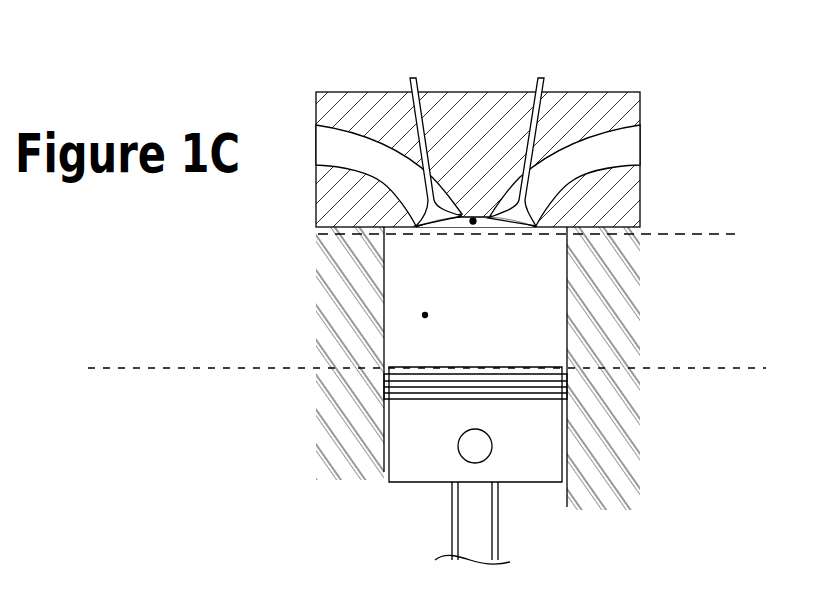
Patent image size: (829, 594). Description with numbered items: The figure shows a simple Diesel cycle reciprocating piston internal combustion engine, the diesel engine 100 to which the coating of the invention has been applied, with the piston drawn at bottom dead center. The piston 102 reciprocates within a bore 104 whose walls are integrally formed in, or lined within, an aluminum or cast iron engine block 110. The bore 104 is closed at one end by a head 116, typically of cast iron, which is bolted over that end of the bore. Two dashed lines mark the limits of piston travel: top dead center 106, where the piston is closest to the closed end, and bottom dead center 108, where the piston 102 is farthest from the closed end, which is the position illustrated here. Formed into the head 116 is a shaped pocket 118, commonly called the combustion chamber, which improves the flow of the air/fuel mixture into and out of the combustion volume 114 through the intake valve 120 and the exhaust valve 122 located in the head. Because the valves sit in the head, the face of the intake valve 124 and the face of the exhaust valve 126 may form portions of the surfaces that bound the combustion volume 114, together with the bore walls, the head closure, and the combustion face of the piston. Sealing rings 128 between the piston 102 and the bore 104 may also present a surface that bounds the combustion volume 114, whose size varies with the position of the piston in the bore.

The diesel engine 100 is at (440, 292).
The piston 102 is at (392, 465).
The bore 104 is at (384, 297).
The top dead center 106 is at (676, 237).
The bottom dead center 108 is at (738, 369).
The engine block 110 is at (618, 468).
The combustion volume 114 is at (423, 315).
The head 116 is at (353, 107).
The pocket 118 is at (474, 219).
The intake valve 120 is at (546, 72).
The exhaust valve 122 is at (417, 83).
The face of the intake valve 124 is at (503, 228).
The face of the exhaust valve 126 is at (450, 226).
The sealing rings 128 is at (383, 388).